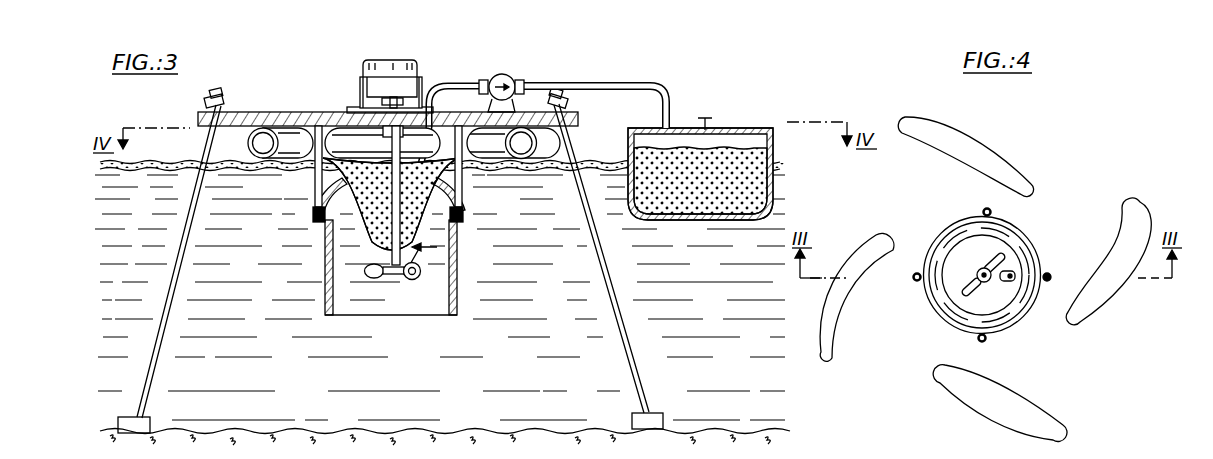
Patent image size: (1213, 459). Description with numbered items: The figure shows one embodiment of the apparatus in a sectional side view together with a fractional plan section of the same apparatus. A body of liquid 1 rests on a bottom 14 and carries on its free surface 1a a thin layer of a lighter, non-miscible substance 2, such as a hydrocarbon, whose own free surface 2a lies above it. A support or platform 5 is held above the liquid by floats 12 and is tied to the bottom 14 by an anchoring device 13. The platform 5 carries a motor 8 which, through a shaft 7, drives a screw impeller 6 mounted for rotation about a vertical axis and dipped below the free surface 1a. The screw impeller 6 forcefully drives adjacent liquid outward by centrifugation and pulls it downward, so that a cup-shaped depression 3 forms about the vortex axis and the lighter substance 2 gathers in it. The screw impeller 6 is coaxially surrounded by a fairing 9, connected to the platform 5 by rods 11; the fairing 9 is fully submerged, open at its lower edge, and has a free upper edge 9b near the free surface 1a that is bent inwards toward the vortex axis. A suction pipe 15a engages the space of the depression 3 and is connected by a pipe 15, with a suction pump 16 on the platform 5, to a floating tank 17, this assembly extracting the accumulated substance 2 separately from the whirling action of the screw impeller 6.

In FIG. 3, the body of liquid 1 is at (335, 383).
In FIG. 3, the free surface of the body of liquid 1a is at (148, 171).
In FIG. 3, the layer of substance 2 is at (787, 153).
In FIG. 3, the free surface of the layer of substance 2a is at (180, 163).
In FIG. 3, the depression 3 is at (391, 204).
In FIG. 3, the platform 5 is at (257, 112).
In FIG. 3, the screw impeller 6 is at (413, 279).
In FIG. 4, the screw impeller 6 is at (996, 260).
In FIG. 4, the shaft 7 is at (990, 283).
In FIG. 3, the motor 8 is at (412, 61).
In FIG. 3, the fairing 9 is at (457, 282).
In FIG. 4, the fairing 9 is at (1022, 232).
In FIG. 3, the free upper edge of the fairing 9b is at (312, 178).
In FIG. 4, the free upper edge of the fairing 9b is at (1020, 297).
In FIG. 3, the rods 11 is at (317, 191).
In FIG. 4, the rods 11 is at (987, 209).
In FIG. 3, the floats 12 is at (279, 135).
In FIG. 4, the floats 12 is at (1000, 153).
In FIG. 3, the anchoring device 13 is at (165, 317).
In FIG. 3, the bottom 14 is at (552, 431).
In FIG. 3, the pipe 15 is at (602, 82).
In FIG. 4, the pipe 15 is at (1014, 273).
In FIG. 3, the suction pipe 15a is at (462, 200).
In FIG. 3, the suction pump 16 is at (503, 74).
In FIG. 3, the floating tank 17 is at (688, 127).